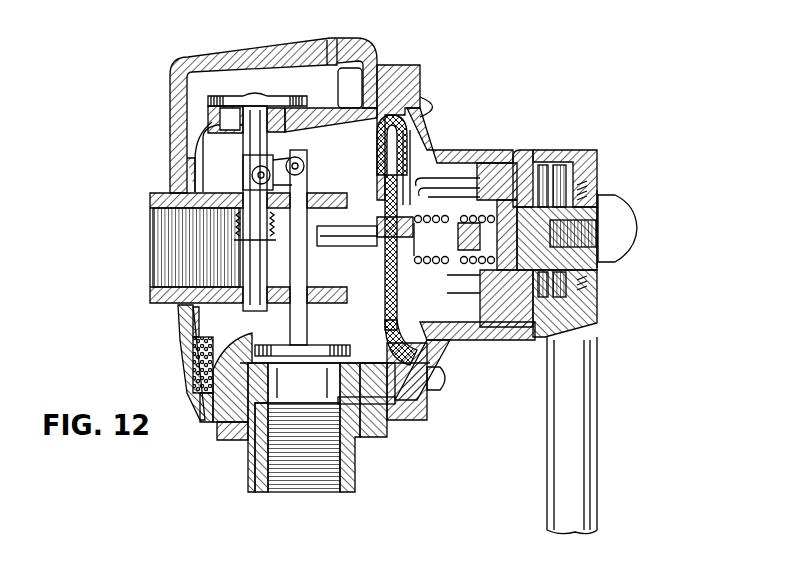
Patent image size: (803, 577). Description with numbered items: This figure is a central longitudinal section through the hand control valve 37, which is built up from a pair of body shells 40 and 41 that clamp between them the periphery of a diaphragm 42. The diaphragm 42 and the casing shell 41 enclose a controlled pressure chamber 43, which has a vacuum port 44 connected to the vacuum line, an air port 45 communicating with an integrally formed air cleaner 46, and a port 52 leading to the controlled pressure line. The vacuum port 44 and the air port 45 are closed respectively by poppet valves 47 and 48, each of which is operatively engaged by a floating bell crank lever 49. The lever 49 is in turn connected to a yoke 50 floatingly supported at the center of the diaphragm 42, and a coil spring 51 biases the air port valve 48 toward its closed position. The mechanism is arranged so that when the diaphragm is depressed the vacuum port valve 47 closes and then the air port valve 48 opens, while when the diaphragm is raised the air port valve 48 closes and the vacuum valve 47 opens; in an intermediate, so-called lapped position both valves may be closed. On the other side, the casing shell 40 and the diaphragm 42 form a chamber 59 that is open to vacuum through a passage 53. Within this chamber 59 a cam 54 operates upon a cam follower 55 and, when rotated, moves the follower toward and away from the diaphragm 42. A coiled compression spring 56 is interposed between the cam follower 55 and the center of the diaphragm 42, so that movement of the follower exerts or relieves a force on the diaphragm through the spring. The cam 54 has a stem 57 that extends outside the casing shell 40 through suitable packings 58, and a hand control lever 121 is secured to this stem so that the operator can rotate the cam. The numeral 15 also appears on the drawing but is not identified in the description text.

The cover 15 is at (238, 83).
The hand control valve 37 is at (492, 100).
The casing shell 40 is at (453, 340).
The casing shell 41 is at (203, 147).
The diaphragm 42 is at (425, 373).
The controlled pressure chamber 43 is at (363, 331).
The vacuum port 44 is at (300, 392).
The air port 45 is at (209, 118).
The air cleaner 46 is at (193, 367).
The poppet valve 47 is at (183, 334).
The poppet valve 48 is at (210, 99).
The floating bell crank lever 49 is at (282, 163).
The yoke 50 is at (342, 230).
The coil spring 51 is at (244, 221).
The port 52 is at (187, 260).
The passage 53 is at (370, 407).
The cam 54 is at (515, 168).
The cam follower 55 is at (497, 240).
The coiled compression spring 56 is at (450, 222).
The stem 57 is at (594, 195).
The packings 58 is at (560, 187).
The chamber 59 is at (447, 293).
The hand control lever 121 is at (593, 372).